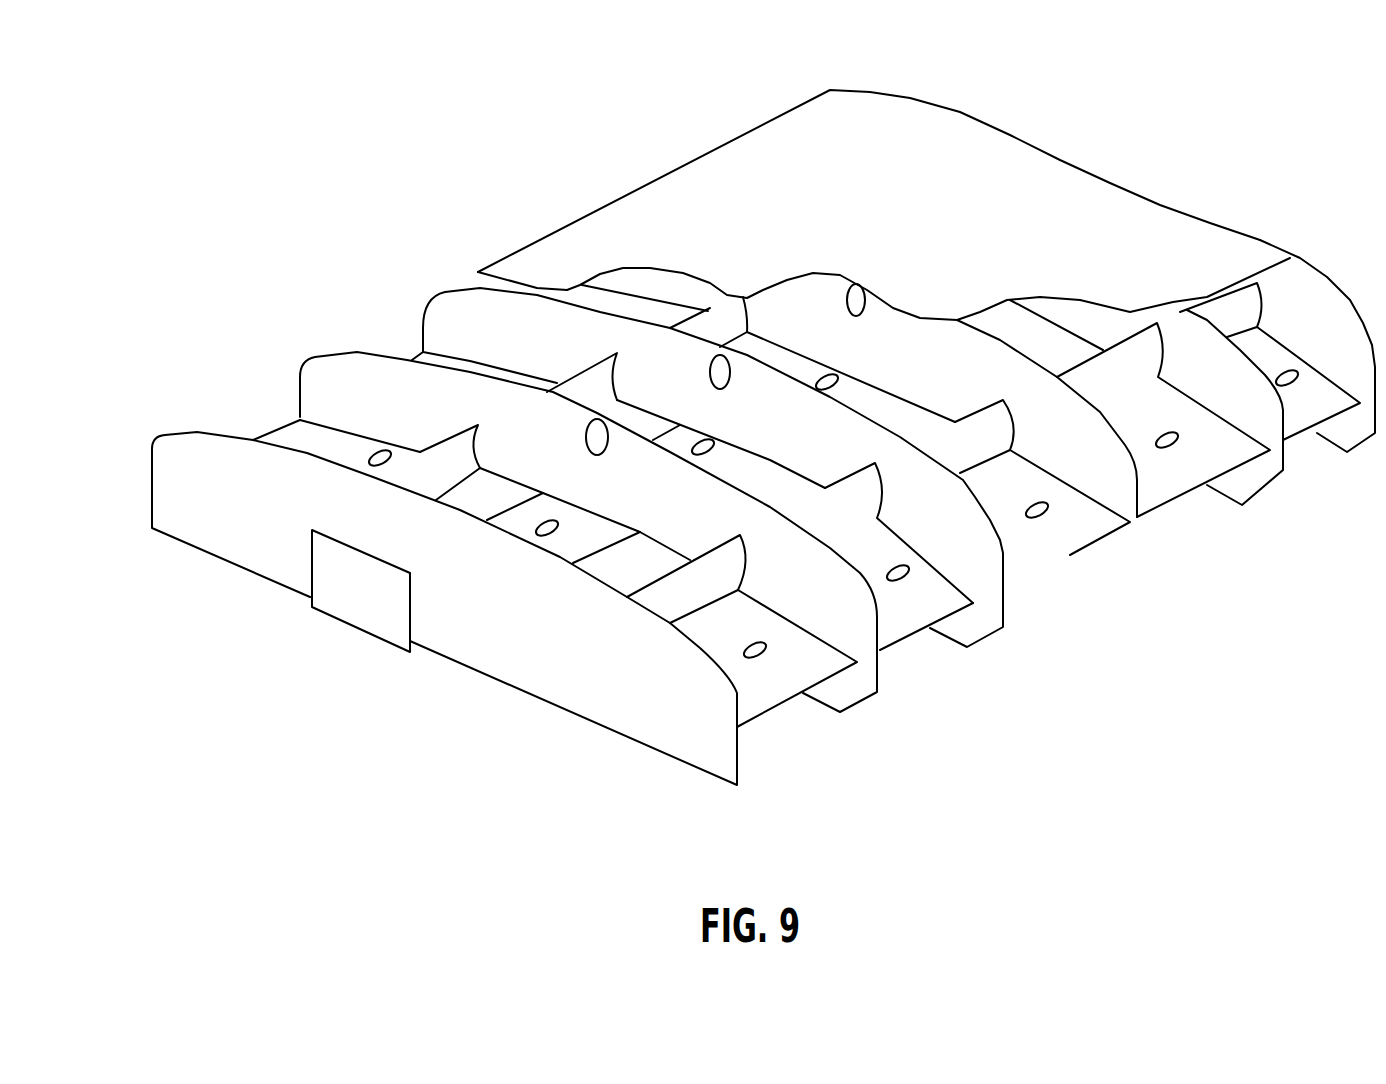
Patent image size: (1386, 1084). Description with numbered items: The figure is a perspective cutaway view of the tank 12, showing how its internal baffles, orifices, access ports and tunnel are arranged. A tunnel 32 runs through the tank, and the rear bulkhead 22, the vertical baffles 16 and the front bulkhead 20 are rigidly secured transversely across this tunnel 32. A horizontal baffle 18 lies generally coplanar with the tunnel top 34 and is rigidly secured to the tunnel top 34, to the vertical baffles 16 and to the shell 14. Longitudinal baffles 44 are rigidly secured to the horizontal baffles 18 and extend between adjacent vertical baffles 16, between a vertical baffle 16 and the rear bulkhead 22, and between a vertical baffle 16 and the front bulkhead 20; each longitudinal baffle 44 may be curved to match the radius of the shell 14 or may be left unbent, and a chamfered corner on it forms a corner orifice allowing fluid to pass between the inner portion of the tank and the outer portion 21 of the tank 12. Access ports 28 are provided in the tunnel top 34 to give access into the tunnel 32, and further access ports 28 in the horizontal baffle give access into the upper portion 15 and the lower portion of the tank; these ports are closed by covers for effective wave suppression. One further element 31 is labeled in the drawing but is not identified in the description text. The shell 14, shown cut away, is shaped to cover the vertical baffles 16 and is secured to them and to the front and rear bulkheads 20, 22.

The tank 12 is at (442, 165).
The shell 14 is at (952, 108).
The upper portion 15 is at (322, 353).
The vertical baffle 16 is at (1285, 465).
The horizontal baffle 18 is at (927, 637).
The front bulkhead 20 is at (1323, 277).
The outer portion 21 is at (423, 312).
The rear bulkhead 22 is at (620, 735).
The access port 28 is at (757, 662).
The tab 31 is at (478, 435).
The tunnel 32 is at (335, 622).
The tunnel top 34 is at (602, 547).
The longitudinal baffle 44 is at (987, 467).